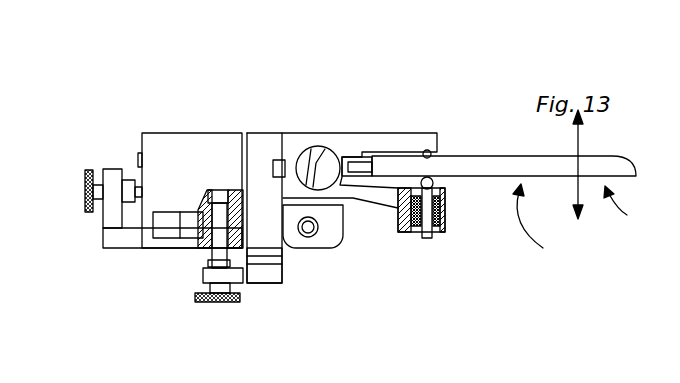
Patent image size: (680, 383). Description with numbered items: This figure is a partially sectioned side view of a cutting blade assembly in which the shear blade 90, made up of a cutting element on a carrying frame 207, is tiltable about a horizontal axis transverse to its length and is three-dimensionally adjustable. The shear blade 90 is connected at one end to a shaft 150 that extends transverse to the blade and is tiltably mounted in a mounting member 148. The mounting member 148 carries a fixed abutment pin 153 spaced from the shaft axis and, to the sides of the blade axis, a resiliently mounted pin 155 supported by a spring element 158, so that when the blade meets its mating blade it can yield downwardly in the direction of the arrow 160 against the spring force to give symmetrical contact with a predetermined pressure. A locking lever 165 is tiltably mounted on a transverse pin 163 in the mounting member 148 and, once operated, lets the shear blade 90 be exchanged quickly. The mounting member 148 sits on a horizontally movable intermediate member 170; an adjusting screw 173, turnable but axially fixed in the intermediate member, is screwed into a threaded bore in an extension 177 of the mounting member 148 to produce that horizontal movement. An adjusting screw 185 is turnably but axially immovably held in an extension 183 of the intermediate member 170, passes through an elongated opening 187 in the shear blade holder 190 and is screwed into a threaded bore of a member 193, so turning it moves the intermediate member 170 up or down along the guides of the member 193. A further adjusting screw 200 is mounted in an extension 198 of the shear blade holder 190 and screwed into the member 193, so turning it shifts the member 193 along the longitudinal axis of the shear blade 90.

The shear blade 90 is at (630, 206).
The mounting member 148 is at (273, 163).
The shaft 150 is at (352, 138).
The fixed abutment pin 153 is at (433, 155).
The resiliently mounted pin 155 is at (434, 184).
The spring element 158 is at (436, 238).
The arrow 160 is at (580, 157).
The transverse pin 163 is at (305, 195).
The locking lever 165 is at (316, 148).
The intermediate member 170 is at (280, 250).
The adjusting screw 173 is at (310, 238).
The extension 177 is at (330, 237).
The extension 183 is at (243, 278).
The adjusting screw 185 is at (207, 303).
The elongated opening 187 is at (210, 255).
The shear blade holder 190 is at (152, 140).
The member 193 is at (138, 165).
The extension 198 is at (110, 218).
The adjusting screw 200 is at (83, 175).
The carrying frame 207 is at (550, 221).